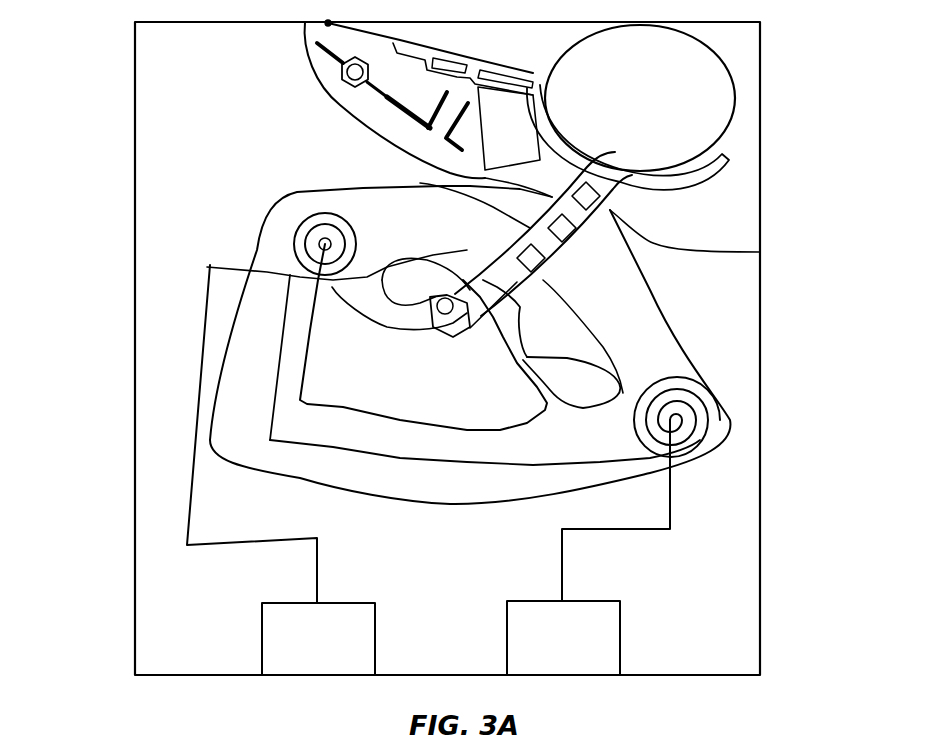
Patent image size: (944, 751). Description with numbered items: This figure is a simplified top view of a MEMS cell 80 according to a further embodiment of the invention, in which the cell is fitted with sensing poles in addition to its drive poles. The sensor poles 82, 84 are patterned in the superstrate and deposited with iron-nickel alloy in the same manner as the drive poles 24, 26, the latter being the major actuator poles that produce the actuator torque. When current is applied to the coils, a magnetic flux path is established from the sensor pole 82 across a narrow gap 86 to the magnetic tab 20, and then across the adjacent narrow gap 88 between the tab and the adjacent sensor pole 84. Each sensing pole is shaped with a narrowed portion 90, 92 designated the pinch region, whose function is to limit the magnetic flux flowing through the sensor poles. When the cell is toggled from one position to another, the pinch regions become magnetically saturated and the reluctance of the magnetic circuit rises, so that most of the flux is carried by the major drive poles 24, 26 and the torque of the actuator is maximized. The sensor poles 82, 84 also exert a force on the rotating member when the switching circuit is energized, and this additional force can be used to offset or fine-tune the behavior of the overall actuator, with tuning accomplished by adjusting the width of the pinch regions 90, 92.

The MEMS cell 80 is at (768, 65).
The drive pole 24 is at (467, 178).
The drive pole 26 is at (548, 288).
The magnetic tab 20 is at (541, 279).
The sensor pole 82 is at (325, 244).
The narrowed portion 90 is at (207, 265).
The narrow gap 86 is at (470, 323).
The sensor pole 84 is at (468, 328).
The narrow gap 88 is at (470, 328).
The narrowed portion 92 is at (665, 380).